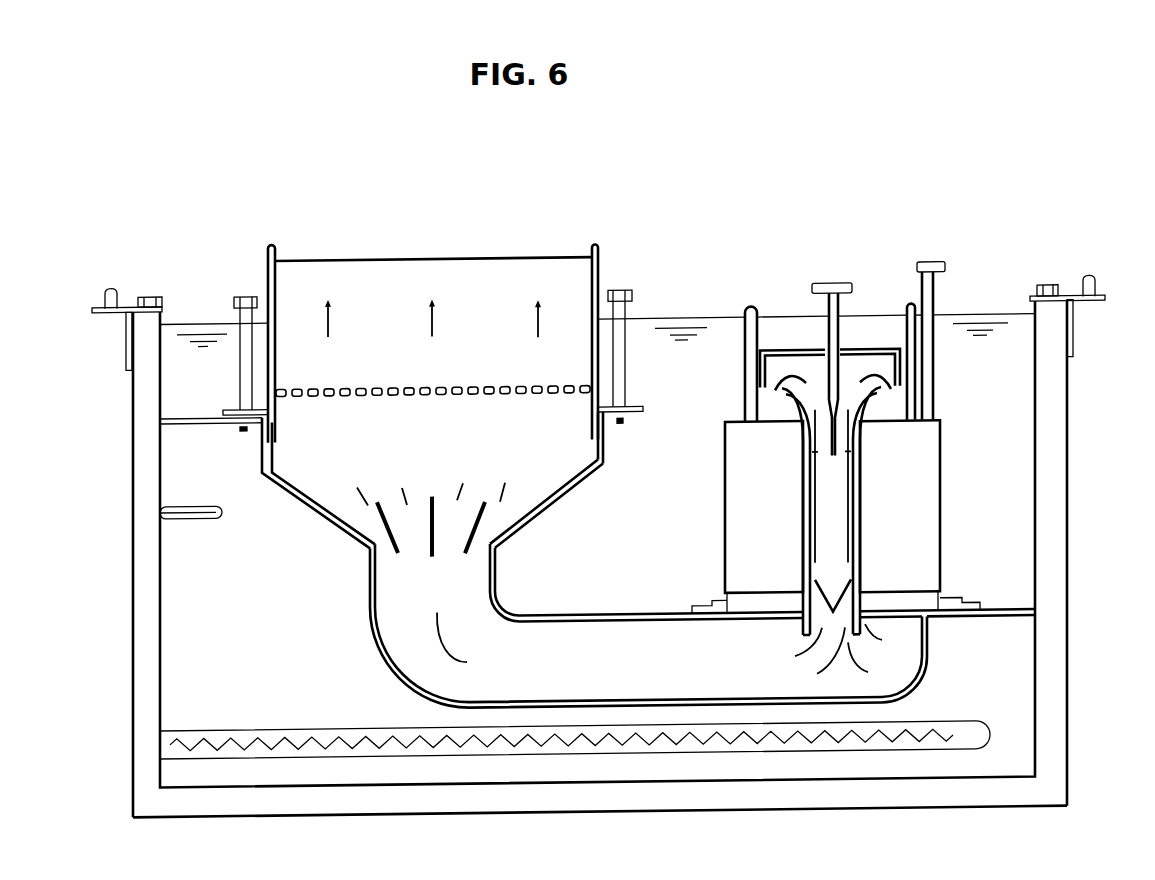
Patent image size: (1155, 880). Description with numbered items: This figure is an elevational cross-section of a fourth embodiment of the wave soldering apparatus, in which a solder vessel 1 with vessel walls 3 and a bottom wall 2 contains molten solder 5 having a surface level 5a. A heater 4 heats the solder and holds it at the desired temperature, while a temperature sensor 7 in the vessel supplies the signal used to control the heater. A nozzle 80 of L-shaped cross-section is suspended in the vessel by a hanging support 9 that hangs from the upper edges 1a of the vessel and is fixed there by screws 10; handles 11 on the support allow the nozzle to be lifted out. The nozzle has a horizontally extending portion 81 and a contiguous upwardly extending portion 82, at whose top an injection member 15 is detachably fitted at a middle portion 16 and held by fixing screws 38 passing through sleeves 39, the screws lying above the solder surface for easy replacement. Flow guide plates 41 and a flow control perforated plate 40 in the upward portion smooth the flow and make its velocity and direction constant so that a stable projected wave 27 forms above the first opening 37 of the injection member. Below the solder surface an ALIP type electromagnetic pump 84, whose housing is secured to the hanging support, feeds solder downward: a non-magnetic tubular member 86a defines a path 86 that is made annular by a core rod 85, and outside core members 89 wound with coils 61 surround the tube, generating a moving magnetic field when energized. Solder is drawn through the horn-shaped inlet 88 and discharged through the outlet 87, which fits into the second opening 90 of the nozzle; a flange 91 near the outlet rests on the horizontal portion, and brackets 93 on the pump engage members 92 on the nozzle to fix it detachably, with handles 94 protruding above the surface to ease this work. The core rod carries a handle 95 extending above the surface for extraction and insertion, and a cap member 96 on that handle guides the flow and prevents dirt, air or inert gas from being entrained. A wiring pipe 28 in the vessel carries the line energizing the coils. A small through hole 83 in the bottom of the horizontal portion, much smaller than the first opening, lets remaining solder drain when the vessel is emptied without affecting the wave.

The solder vessel 1 is at (1050, 755).
The upper edges of the solder vessel 1a is at (128, 353).
The bottom wall 2 is at (758, 806).
The vessel walls 3 is at (1040, 406).
The heater 4 is at (243, 740).
The molten solder 5 is at (1020, 731).
The surface level 5a is at (695, 324).
The temperature sensor 7 is at (190, 505).
The hanging support 9 is at (168, 384).
The screws 10 is at (150, 297).
The handles 11 is at (112, 289).
The injection member 15 is at (603, 297).
The middle portion 16 is at (588, 487).
The projected wave 27 is at (430, 263).
The wiring pipe 28 is at (935, 297).
The first opening 37 is at (373, 288).
The fixing screws 38 is at (237, 320).
The sleeves 39 is at (243, 298).
The flow control perforated plate 40 is at (362, 394).
The flow guide plates 41 is at (370, 545).
The coils 61 is at (900, 571).
The nozzle 80 is at (311, 518).
The horizontally extending portion 81 is at (592, 620).
The upwardly extending portion 82 is at (505, 547).
The small through hole 83 is at (655, 683).
The electromagnetic pump 84 is at (727, 494).
The core rod 85 is at (842, 488).
The path 86 is at (853, 522).
The non-magnetic tubular member 86a is at (807, 535).
The outlet 87 is at (859, 634).
The inlet 88 is at (853, 388).
The outside core members 89 is at (922, 545).
The second opening 90 is at (867, 638).
The flange 91 is at (772, 622).
The members 92 is at (718, 611).
The brackets 93 is at (740, 622).
The handles 94 is at (750, 316).
The handle 95 is at (829, 293).
The cap member 96 is at (787, 360).